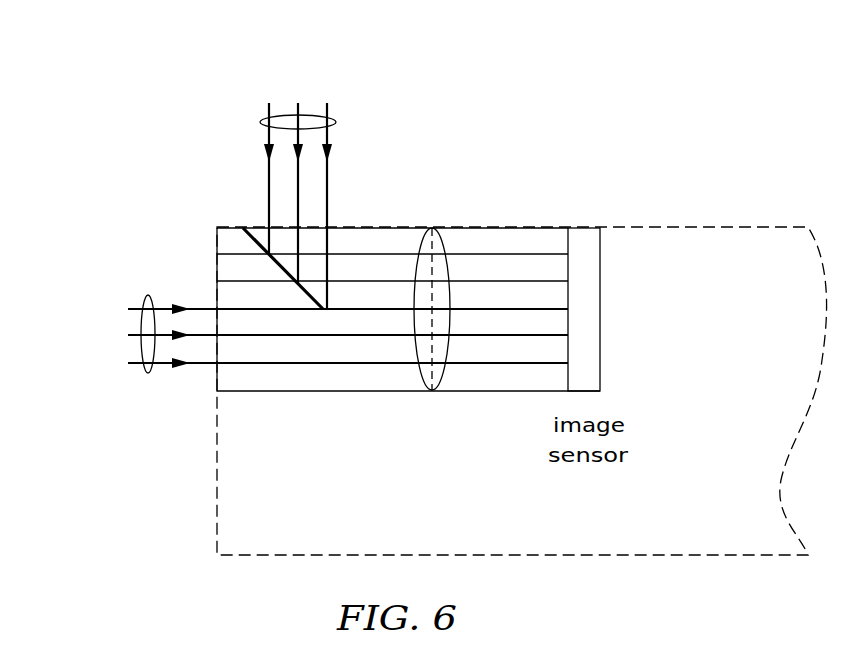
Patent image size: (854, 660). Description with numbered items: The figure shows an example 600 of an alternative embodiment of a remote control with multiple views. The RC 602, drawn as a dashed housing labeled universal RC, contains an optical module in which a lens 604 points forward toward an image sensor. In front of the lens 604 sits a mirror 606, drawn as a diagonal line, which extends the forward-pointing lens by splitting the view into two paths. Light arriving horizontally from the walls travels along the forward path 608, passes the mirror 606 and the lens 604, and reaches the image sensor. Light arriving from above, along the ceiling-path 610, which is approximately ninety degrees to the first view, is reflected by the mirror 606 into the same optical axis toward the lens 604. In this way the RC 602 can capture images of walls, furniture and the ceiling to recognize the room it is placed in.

The example 600 is at (518, 42).
The RC 602 is at (706, 227).
The lens 604 is at (437, 244).
The mirror 606 is at (276, 261).
The forward path 608 is at (148, 373).
The ceiling-path 610 is at (336, 122).